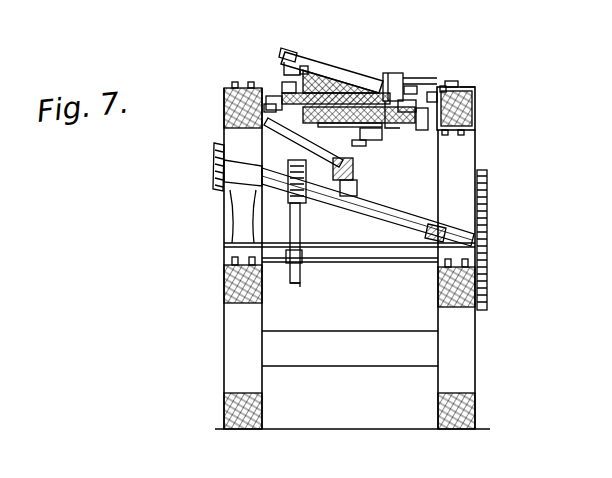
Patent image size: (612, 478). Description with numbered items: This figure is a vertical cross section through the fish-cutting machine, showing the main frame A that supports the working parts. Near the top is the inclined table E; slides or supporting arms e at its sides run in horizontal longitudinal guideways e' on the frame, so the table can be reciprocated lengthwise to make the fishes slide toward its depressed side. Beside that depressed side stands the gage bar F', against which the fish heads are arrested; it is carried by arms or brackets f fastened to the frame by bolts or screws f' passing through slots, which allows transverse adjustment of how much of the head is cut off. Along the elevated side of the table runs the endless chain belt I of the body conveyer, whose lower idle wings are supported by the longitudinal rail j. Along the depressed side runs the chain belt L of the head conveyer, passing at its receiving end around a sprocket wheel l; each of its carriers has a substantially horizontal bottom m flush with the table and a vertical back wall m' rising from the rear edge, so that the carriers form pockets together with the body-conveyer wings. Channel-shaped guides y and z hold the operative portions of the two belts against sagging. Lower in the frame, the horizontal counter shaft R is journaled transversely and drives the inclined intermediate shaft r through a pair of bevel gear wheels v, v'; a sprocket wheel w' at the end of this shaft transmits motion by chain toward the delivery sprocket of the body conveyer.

The main frame A is at (344, 255).
The counter shaft R is at (383, 259).
The endless chain belt I is at (248, 153).
The channel-shaped guide z is at (477, 108).
The bar E is at (341, 85).
The channel-shaped guide y is at (283, 62).
The supporting arms e is at (310, 125).
The horizontal longitudinal guideways e' is at (310, 125).
The horizontal bottom m is at (403, 109).
The vertical back wall m' is at (381, 94).
The arm F' is at (424, 65).
The bolts or screws f' is at (460, 72).
The arms or brackets f is at (480, 80).
The sprocket wheel l is at (350, 132).
The endless chain belt L is at (377, 120).
The longitudinal supporting rail j is at (405, 135).
The sprocket wheel w' is at (321, 194).
The rod r is at (369, 218).
The bevel gear wheel v' is at (307, 221).
The bevel gear wheel v is at (300, 275).